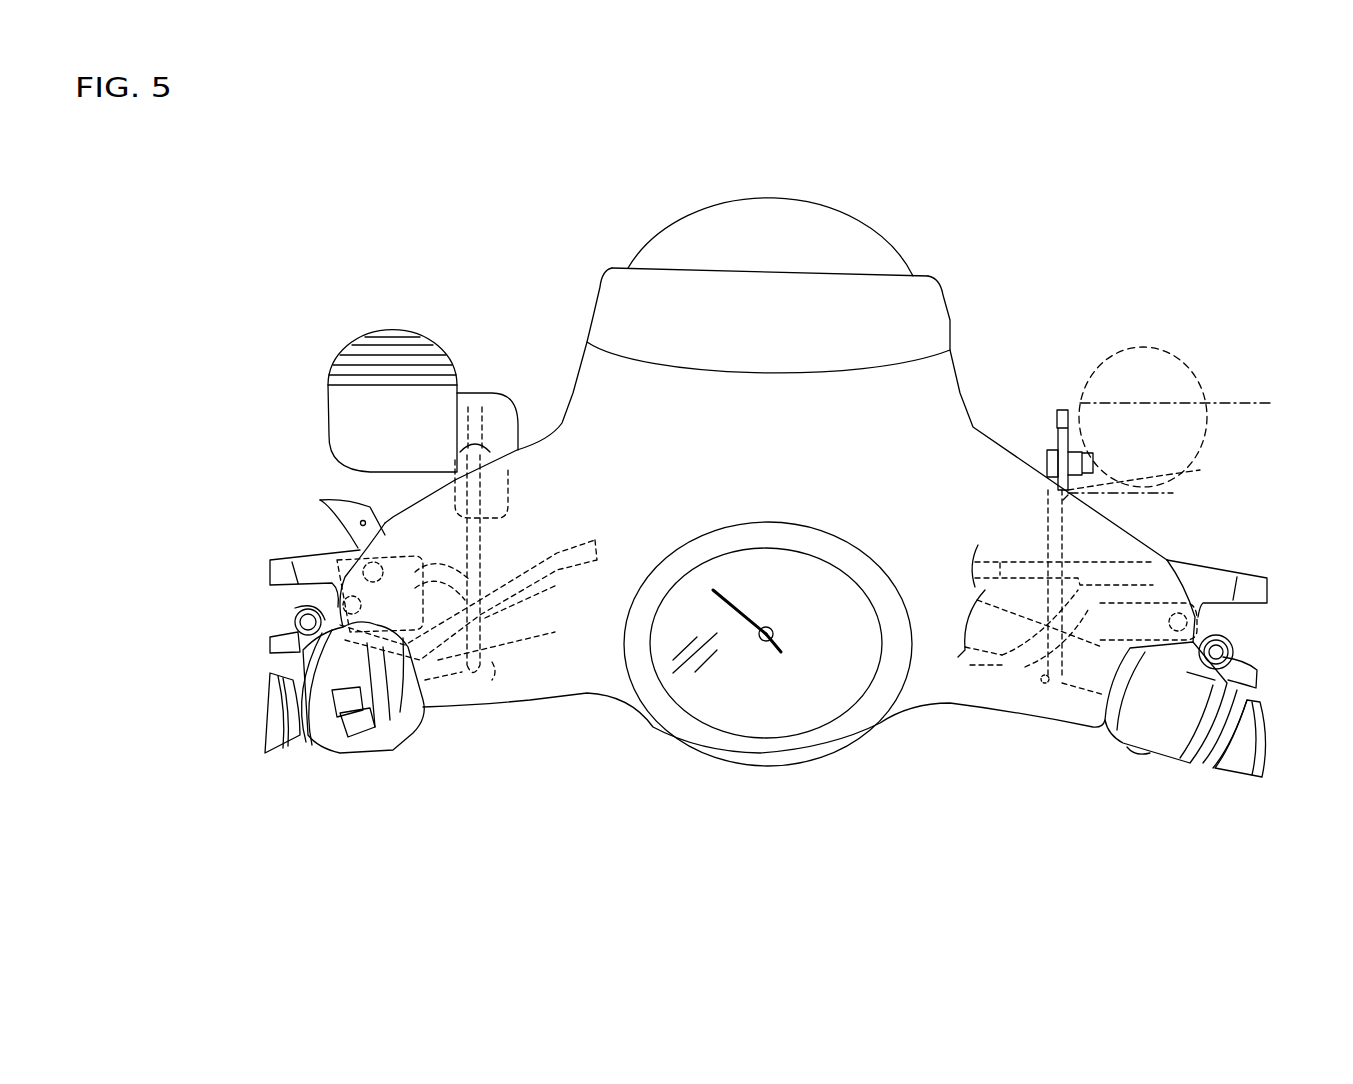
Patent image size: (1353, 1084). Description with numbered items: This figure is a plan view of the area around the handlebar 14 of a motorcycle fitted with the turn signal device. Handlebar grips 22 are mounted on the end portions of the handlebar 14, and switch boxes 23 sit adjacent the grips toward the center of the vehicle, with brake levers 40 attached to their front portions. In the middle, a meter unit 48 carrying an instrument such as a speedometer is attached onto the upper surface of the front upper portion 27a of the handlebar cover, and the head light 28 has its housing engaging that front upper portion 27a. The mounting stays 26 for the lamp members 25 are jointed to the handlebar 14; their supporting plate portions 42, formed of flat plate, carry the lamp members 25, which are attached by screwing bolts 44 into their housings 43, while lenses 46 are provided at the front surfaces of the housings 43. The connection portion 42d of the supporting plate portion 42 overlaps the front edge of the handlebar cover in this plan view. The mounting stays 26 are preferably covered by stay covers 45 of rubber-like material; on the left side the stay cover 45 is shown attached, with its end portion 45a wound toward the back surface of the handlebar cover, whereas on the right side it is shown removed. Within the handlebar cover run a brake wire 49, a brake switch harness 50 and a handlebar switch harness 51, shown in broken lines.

The handlebar 14 is at (525, 650).
The handlebar grips 22 is at (282, 735).
The switch boxes 23 is at (385, 725).
The lamp members 25 is at (325, 395).
The mounting stays 26 is at (1067, 515).
The front upper portion of handlebar cover 27a is at (968, 485).
The head light 28 is at (845, 232).
The brake levers 40 is at (282, 550).
The supporting plate portions 42 is at (1050, 427).
The connection portion 42d is at (1257, 475).
The housings 43 is at (362, 435).
The bolts 44 is at (1047, 473).
The stay covers 45 is at (507, 392).
The end portion of stay cover 45a is at (510, 518).
The lenses 46 is at (398, 332).
The meter unit 48 is at (775, 708).
The brake wire 49 is at (1000, 563).
The brake switch harness 50 is at (542, 588).
The handlebar switch harness 51 is at (438, 660).